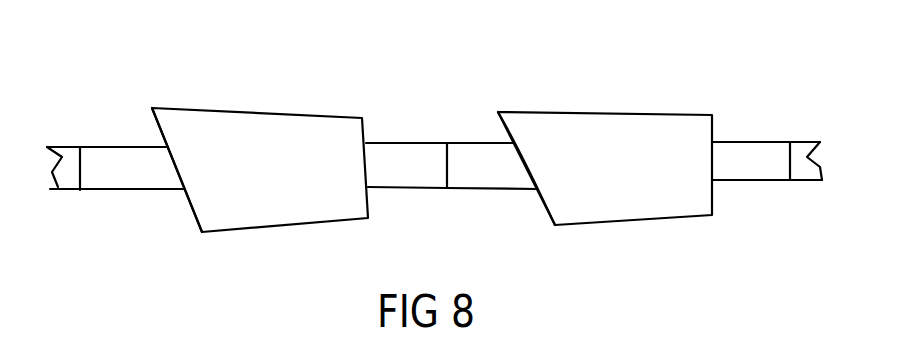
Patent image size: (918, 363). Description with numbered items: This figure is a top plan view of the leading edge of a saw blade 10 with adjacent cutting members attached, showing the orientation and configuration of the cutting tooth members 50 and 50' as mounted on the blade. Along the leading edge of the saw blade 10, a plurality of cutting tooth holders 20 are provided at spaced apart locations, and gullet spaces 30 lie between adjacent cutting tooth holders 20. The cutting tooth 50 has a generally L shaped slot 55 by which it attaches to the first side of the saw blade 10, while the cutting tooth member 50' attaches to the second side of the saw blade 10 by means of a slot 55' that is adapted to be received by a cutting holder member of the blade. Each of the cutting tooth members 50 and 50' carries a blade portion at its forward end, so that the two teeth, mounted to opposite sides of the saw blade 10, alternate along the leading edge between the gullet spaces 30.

The saw blade 10 is at (797, 132).
The cutting tooth holder 20 is at (408, 160).
The gullet space 30 is at (127, 170).
The cutting tooth 50 is at (260, 129).
The cutting tooth member 50' is at (605, 125).
The L shaped slot 55 is at (159, 129).
The slot 55' is at (511, 175).